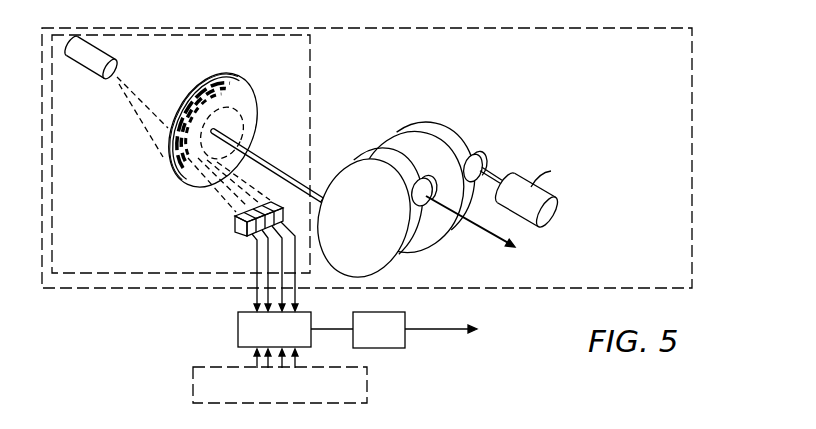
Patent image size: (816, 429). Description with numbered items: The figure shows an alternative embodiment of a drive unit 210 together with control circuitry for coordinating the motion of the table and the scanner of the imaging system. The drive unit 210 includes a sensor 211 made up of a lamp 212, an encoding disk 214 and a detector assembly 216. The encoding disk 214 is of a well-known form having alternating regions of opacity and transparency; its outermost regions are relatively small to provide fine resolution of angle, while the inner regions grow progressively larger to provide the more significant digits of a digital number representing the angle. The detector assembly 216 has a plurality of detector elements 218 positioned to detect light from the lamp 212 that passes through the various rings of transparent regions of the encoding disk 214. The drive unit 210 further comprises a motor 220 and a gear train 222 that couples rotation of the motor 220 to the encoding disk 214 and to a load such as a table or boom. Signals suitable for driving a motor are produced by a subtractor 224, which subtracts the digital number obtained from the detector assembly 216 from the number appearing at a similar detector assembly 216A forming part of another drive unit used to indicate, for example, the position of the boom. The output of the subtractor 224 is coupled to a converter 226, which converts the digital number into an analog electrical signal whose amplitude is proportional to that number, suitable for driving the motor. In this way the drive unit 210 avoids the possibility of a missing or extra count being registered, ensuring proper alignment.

The drive unit 210 is at (693, 88).
The sensor 211 is at (312, 97).
The lamp 212 is at (112, 58).
The encoding disk 214 is at (256, 108).
The detector assembly 216 is at (231, 233).
The detector assembly 216A is at (190, 379).
The detector elements 218 is at (285, 207).
The motor 220 is at (554, 208).
The gear train 222 is at (368, 148).
The subtractor 224 is at (306, 323).
The converter 226 is at (388, 349).